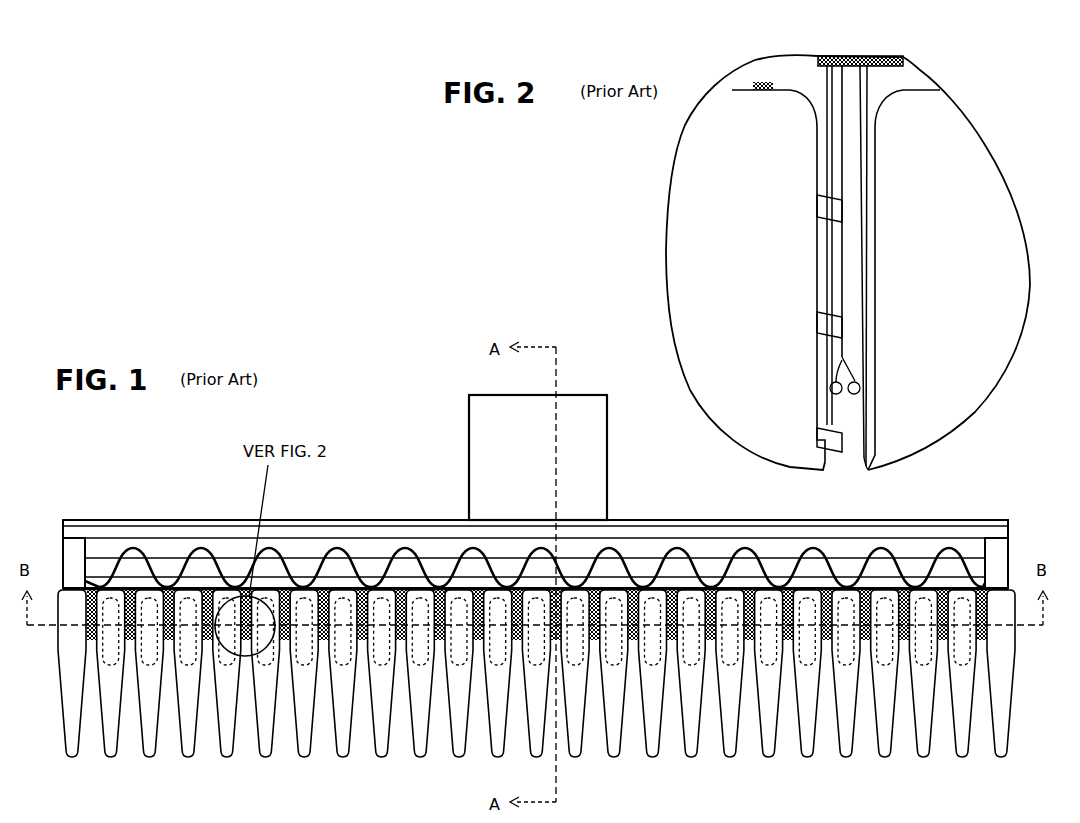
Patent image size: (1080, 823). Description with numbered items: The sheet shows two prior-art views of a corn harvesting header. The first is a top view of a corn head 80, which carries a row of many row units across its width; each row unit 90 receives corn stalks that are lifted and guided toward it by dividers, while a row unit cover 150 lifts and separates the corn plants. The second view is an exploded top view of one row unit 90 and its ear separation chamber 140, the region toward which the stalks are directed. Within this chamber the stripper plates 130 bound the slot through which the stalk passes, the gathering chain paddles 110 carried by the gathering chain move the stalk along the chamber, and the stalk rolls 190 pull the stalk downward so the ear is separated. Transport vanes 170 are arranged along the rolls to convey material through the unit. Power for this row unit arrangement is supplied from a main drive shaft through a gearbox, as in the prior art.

In FIG. 1, the corn head 80 is at (166, 520).
In FIG. 2, the row unit 90 is at (880, 84).
In FIG. 2, the row unit cover 150 is at (725, 198).
In FIG. 2, the stripper plates 130 is at (808, 260).
In FIG. 2, the ear separation chamber 140 is at (793, 293).
In FIG. 2, the gathering chain paddles 110 is at (840, 330).
In FIG. 2, the stalk rolls 190 is at (840, 358).
In FIG. 2, the transport vanes 170 is at (840, 380).